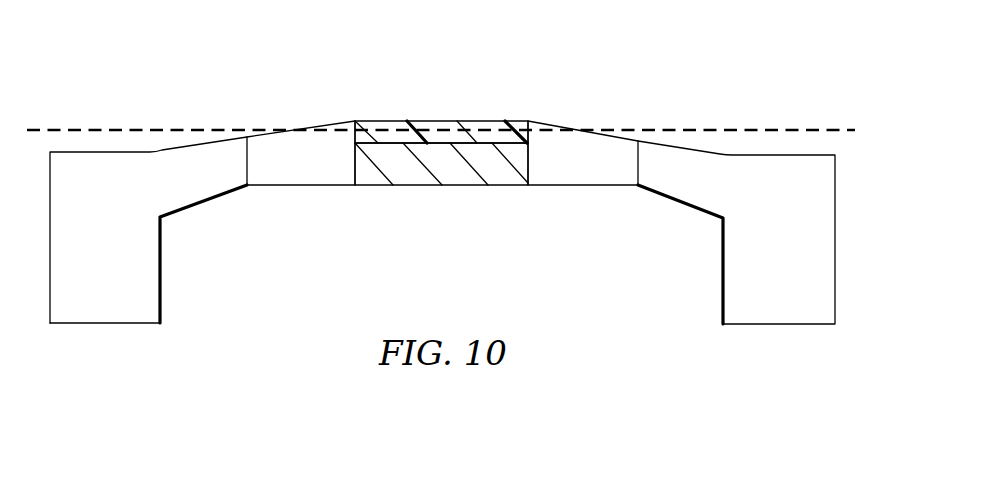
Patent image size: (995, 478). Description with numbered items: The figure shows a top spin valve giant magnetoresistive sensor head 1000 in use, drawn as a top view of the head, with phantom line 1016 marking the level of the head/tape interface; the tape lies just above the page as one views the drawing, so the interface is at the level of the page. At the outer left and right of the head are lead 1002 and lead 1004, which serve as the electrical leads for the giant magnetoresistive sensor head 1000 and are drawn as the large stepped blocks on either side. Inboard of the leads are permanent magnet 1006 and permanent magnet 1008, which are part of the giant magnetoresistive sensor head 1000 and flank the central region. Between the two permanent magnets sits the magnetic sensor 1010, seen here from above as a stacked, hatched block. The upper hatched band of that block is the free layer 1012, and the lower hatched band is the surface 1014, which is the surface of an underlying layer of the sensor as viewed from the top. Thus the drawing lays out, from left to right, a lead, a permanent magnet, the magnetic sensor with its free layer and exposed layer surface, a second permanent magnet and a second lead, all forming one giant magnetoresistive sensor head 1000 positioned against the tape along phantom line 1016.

The giant magnetoresistive sensor head 1000 is at (166, 96).
The lead 1002 is at (105, 324).
The lead 1004 is at (778, 324).
The permanent magnet 1006 is at (300, 186).
The permanent magnet 1008 is at (583, 186).
The magnetic sensor 1010 is at (471, 200).
The free layer 1012 is at (442, 121).
The surface 1014 is at (410, 186).
The phantom line 1016 is at (787, 131).